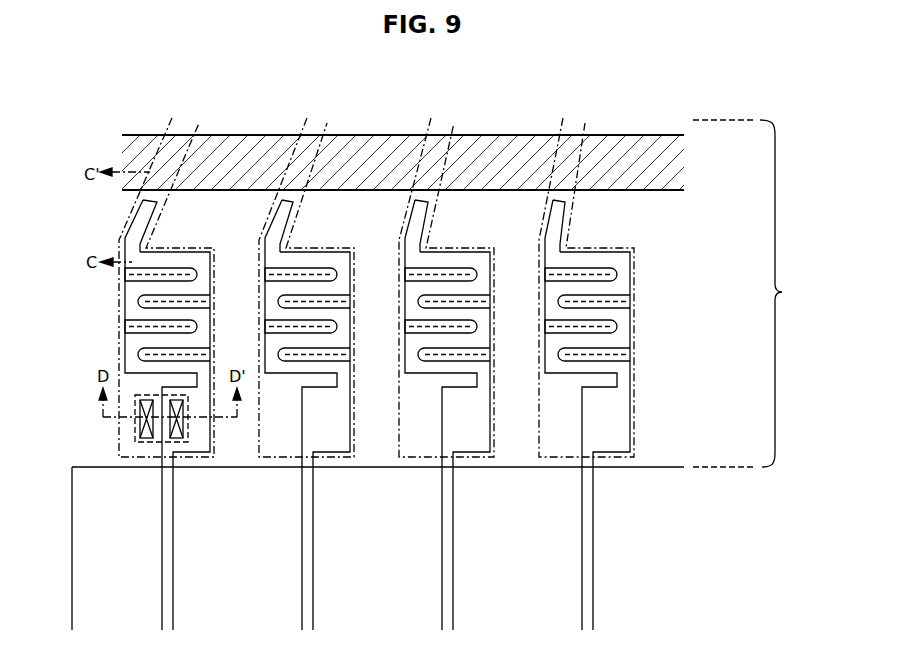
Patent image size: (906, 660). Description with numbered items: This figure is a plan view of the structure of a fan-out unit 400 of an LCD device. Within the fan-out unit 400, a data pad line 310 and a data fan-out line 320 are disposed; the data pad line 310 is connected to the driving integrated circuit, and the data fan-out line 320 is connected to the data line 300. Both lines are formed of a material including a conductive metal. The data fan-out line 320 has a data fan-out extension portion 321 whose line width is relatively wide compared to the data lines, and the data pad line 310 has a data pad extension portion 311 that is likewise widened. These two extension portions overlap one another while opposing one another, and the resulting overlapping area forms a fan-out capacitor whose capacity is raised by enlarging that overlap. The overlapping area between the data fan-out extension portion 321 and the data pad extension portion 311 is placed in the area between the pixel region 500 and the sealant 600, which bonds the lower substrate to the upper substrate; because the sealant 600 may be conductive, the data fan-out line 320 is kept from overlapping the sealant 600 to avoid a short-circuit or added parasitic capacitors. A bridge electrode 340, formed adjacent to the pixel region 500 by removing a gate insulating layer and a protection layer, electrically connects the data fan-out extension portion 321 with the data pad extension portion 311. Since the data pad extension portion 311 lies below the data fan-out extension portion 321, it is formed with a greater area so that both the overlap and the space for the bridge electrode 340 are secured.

The data line 300 is at (162, 545).
The data pad line 310 is at (170, 118).
The data pad extension portion 311 is at (132, 407).
The data fan-out line 320 is at (125, 348).
The data fan-out extension portion 321 is at (200, 447).
The bridge electrode 340 is at (137, 432).
The fan-out unit 400 is at (756, 293).
The pixel region 500 is at (658, 530).
The sealant 600 is at (637, 165).